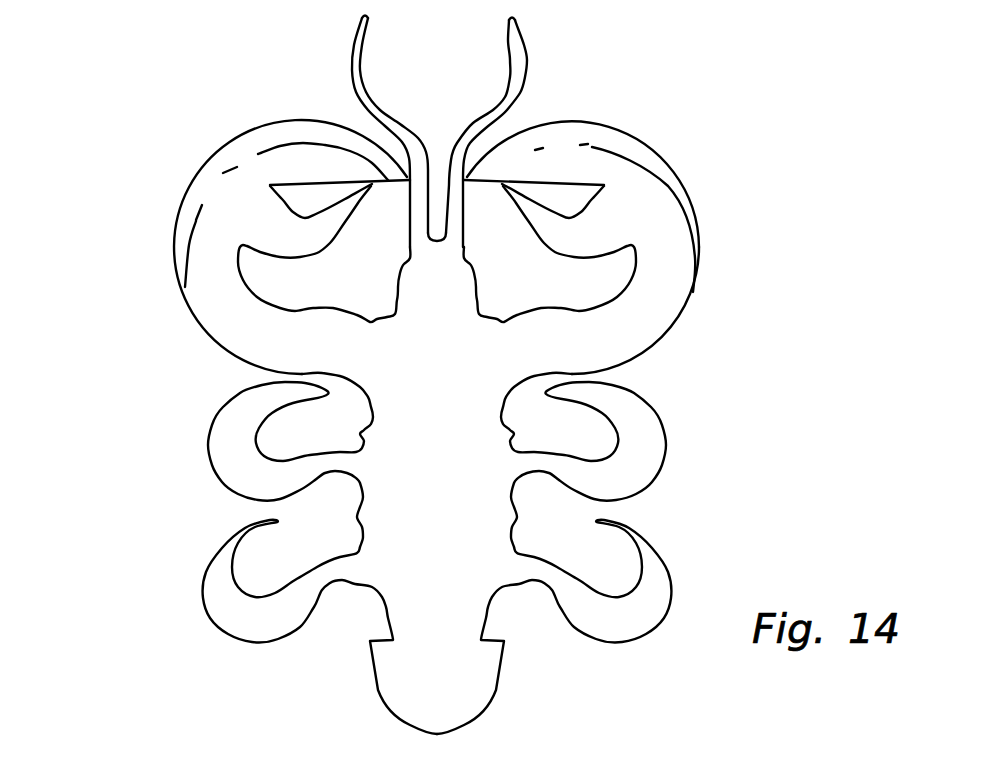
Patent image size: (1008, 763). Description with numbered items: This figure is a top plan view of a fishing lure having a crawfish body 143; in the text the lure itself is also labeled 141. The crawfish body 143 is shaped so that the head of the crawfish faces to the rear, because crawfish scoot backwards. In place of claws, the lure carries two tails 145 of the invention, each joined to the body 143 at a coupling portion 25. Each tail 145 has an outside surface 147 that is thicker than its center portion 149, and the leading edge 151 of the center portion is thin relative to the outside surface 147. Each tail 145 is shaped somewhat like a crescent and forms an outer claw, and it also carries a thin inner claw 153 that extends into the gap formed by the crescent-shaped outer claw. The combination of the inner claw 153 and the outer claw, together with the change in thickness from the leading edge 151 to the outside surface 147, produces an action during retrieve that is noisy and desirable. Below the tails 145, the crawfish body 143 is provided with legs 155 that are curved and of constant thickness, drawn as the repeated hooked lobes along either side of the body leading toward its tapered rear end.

The cast model assembly 141 is at (407, 375).
The crawfish body 143 is at (400, 509).
The tail 145 is at (288, 157).
The outside surface 147 is at (640, 140).
The center portion 149 is at (618, 181).
The leading edge 151 is at (560, 190).
The inner claw 153 is at (579, 233).
The legs 155 is at (643, 478).
The coupling portion 25 is at (570, 338).